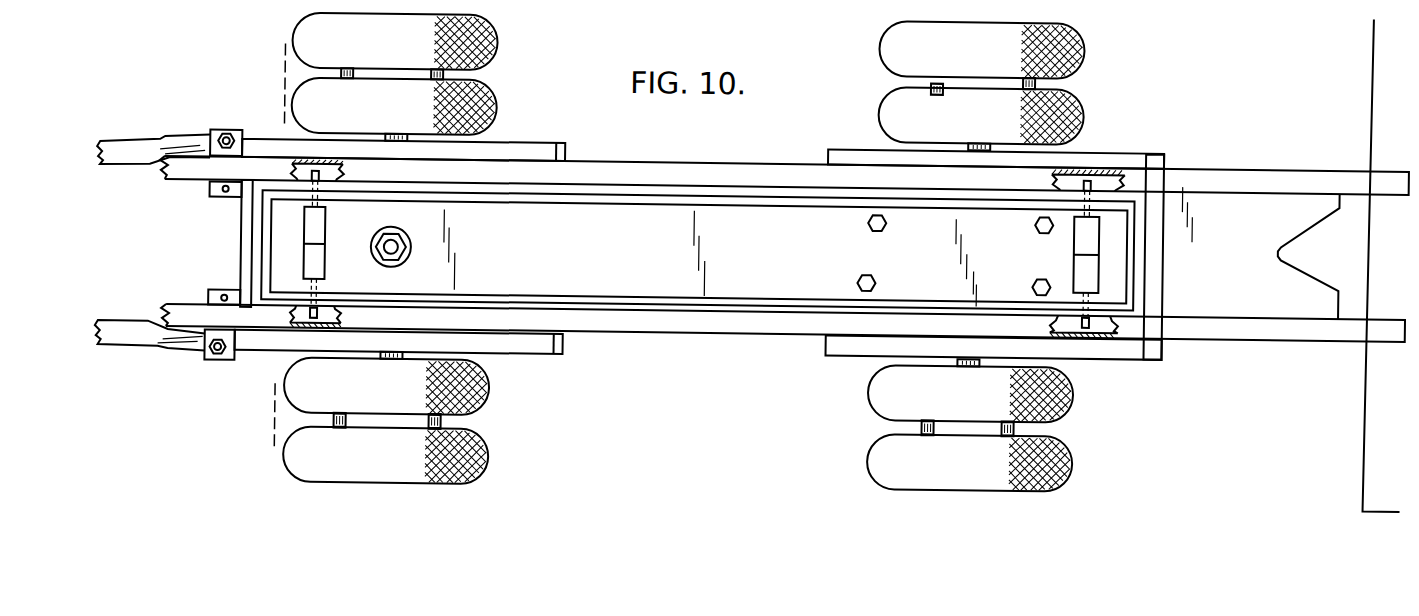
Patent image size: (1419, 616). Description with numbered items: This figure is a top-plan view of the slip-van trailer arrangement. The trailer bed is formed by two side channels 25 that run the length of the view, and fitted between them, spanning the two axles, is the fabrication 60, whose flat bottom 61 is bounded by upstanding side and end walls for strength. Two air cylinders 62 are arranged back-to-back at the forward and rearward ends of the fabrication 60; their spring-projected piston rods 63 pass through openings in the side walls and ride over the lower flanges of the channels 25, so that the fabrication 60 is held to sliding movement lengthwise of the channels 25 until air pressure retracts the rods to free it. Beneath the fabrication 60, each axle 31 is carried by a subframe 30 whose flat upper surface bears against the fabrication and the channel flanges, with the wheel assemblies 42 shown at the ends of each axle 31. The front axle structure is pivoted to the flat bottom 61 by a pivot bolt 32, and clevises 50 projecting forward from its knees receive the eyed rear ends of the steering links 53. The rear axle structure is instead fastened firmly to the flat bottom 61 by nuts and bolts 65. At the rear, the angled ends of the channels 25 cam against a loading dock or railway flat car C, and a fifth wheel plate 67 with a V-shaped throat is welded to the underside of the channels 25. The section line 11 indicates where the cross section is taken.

The section line 11- 11 is at (281, 99).
The channels 25 is at (598, 165).
The subframe 30 is at (537, 138).
The axle 31 is at (394, 357).
The pivot bolt 32 is at (401, 252).
The wheels 42 is at (487, 89).
The clevis 50 is at (211, 129).
The steering link 53 is at (122, 165).
The fabrication 60 is at (767, 191).
The flat bottom 61 is at (647, 215).
The air cylinder 62 is at (327, 262).
The piston rod 63 is at (314, 311).
The nuts and bolts 65 is at (880, 224).
The fifth wheel plate 67 is at (1240, 181).
The railway flat car C is at (1381, 30).